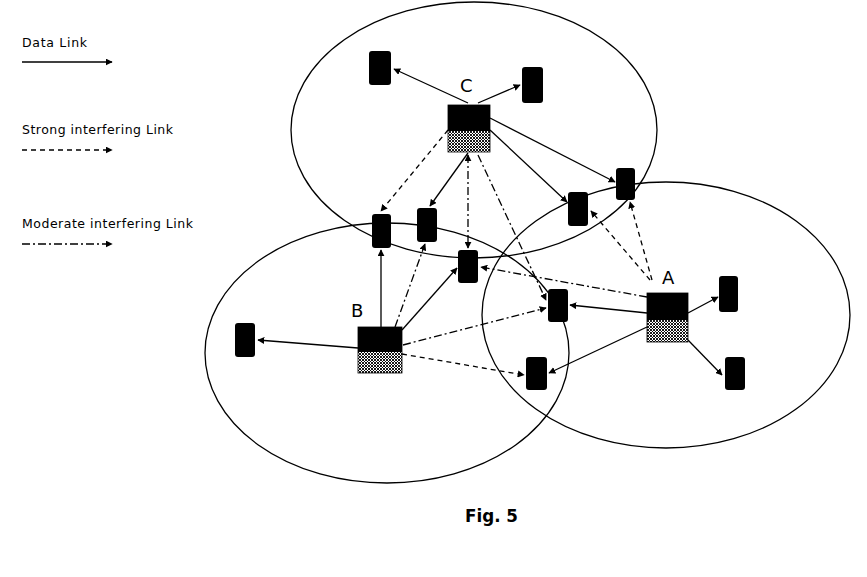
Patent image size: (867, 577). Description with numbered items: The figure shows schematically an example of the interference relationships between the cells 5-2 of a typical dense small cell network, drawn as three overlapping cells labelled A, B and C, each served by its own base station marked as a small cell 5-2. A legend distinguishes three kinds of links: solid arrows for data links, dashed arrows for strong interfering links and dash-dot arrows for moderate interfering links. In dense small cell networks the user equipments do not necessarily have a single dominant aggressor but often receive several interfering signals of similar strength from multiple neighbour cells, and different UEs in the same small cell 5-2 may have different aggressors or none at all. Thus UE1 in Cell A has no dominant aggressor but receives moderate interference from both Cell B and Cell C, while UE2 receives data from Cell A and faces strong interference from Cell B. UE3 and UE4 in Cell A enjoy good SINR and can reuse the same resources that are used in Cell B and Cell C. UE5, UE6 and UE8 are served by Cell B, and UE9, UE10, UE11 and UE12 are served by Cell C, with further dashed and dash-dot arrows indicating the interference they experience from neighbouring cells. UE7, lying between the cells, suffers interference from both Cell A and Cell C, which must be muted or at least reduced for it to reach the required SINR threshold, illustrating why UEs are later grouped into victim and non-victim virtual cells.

The small cell 5-2 is at (447, 121).
The UE #1 UE1 is at (570, 303).
The UE #2 UE2 is at (529, 364).
The UE #3 UE3 is at (731, 363).
The UE #4 UE4 is at (723, 284).
The UE #5 UE5 is at (240, 328).
The UE #6 UE6 is at (362, 218).
The UE #7 UE7 is at (469, 254).
The UE #8 UE8 is at (417, 214).
The UE #9 UE9 is at (567, 196).
The UE #10 UE10 is at (616, 172).
The UE #11 UE11 is at (525, 74).
The UE #12 UE12 is at (375, 58).